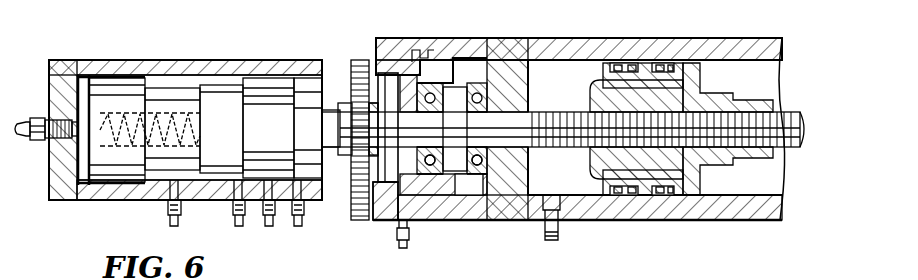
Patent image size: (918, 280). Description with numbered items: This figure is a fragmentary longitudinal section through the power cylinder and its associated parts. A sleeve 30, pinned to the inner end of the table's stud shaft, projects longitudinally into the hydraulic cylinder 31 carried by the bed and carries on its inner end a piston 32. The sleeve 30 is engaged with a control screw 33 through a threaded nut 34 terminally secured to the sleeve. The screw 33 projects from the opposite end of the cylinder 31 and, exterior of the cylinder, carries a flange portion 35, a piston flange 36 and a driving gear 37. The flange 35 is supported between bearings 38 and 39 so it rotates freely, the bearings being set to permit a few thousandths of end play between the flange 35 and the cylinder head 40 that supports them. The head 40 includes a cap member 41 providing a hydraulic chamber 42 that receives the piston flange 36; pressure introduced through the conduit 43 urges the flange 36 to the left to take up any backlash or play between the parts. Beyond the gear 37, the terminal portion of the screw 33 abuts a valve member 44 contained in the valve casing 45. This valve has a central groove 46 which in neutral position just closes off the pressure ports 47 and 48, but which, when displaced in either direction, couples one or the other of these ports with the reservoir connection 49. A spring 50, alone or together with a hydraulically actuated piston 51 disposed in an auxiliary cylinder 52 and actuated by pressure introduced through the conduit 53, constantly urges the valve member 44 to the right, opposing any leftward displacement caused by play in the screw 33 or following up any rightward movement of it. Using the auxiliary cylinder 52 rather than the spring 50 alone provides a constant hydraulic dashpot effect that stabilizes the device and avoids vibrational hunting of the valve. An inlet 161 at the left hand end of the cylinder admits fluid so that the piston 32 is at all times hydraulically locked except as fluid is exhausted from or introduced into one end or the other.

The sleeve 30 is at (763, 160).
The hydraulic cylinder 31 is at (740, 48).
The piston 32 is at (643, 65).
The control screw 33 is at (748, 117).
The threaded nut 34 is at (688, 165).
The flange portion 35 is at (453, 100).
The piston flange 36 is at (390, 87).
The driving gear 37 is at (362, 60).
The bearing 38 is at (436, 176).
The bearing 39 is at (462, 176).
The cylinder head 40 is at (532, 173).
The cap member 41 is at (382, 222).
The hydraulic chamber 42 is at (418, 62).
The conduit 43 is at (405, 242).
The valve member 44 is at (312, 110).
The valve casing 45 is at (268, 73).
The central groove 46 is at (267, 97).
The pressure port 47 is at (233, 192).
The pressure port 48 is at (290, 190).
The reservoir connection 49 is at (268, 190).
The spring 50 is at (127, 155).
The hydraulically actuated piston 51 is at (120, 92).
The auxiliary hydraulic cylinder 52 is at (83, 92).
The conduit 53 is at (40, 118).
The inlet 161 is at (560, 226).